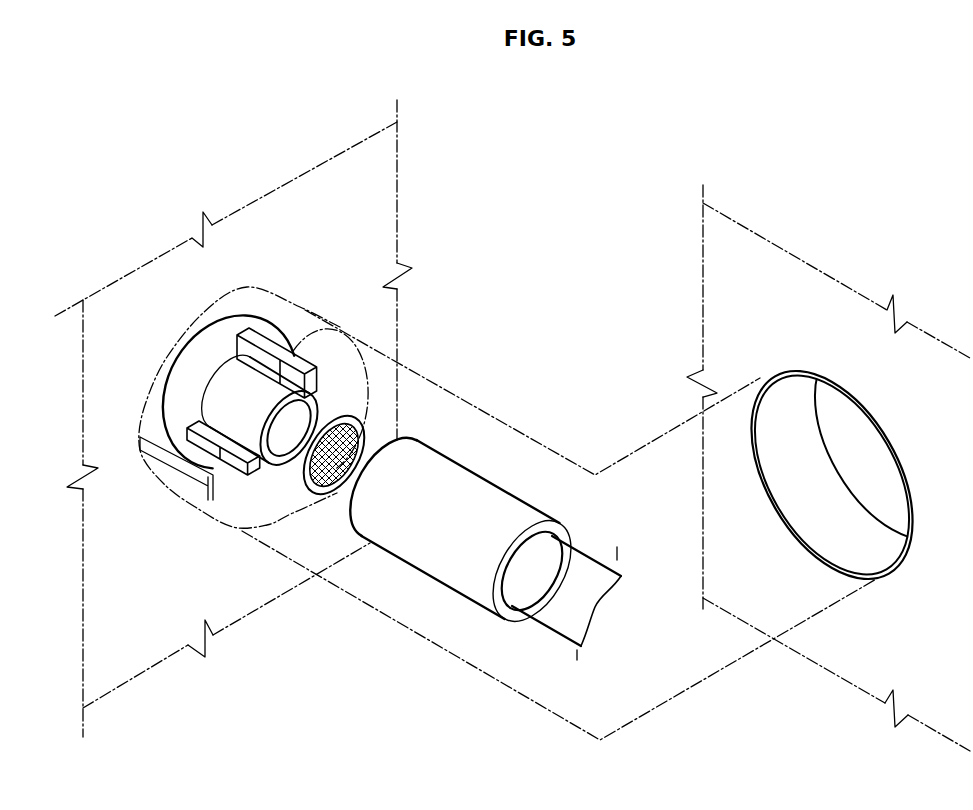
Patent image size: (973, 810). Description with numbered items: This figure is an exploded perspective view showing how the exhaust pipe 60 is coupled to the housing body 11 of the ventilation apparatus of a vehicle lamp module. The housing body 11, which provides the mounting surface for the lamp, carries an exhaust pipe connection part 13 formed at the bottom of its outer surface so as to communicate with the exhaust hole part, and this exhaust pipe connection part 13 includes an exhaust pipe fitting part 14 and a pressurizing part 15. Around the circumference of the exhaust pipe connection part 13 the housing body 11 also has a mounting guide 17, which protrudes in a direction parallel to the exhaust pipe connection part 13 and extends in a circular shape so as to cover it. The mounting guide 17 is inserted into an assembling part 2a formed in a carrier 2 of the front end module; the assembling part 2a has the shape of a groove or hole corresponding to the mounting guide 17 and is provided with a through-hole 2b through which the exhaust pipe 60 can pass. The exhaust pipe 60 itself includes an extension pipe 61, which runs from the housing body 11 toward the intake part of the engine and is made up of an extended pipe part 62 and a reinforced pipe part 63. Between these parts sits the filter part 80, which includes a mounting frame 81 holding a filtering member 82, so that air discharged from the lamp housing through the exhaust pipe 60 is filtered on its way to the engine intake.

The carrier 2 is at (810, 468).
The assembling part 2a is at (780, 513).
The through-hole 2b is at (838, 535).
The housing body 11 is at (367, 175).
The exhaust pipe connection part 13 is at (320, 370).
The exhaust pipe fitting part 14 is at (243, 412).
The pressurizing part 15 is at (210, 352).
The mounting guide 17 is at (343, 282).
The exhaust pipe 60 is at (496, 525).
The extension pipe 61 is at (496, 525).
The extended pipe part 62 is at (583, 572).
The reinforced pipe part 63 is at (458, 485).
The filter part 80 is at (403, 431).
The mounting frame 81 is at (362, 424).
The filtering member 82 is at (347, 446).